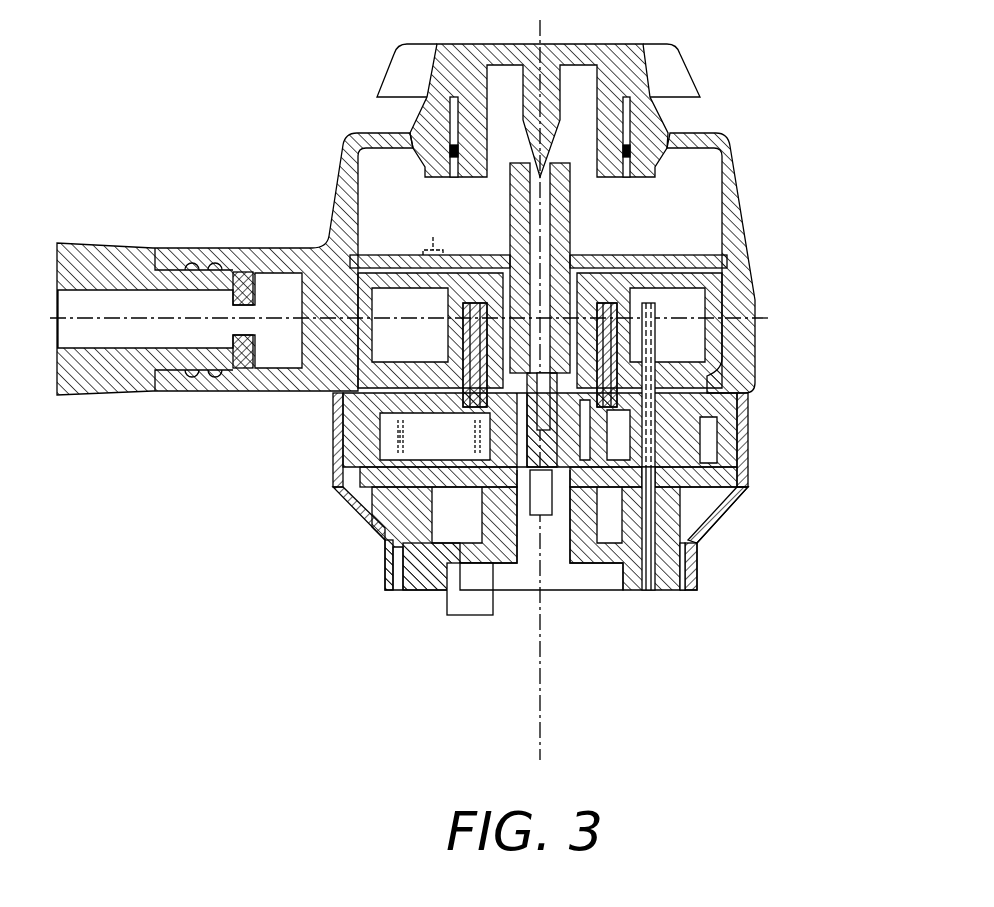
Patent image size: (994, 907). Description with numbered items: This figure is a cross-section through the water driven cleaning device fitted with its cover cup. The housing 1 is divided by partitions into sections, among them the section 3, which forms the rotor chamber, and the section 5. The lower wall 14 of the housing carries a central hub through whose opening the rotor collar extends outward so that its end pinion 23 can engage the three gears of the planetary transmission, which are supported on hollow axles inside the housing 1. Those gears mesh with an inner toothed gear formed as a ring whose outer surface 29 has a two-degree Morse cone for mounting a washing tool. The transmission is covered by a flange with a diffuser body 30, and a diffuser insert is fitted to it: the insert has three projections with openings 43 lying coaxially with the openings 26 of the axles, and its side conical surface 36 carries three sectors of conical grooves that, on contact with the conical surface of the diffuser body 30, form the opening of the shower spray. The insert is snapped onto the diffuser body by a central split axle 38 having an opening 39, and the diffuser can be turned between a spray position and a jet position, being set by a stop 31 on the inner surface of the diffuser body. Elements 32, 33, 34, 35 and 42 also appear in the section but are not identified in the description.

The housing 1 is at (743, 168).
The section 3 is at (712, 357).
The section 5 is at (390, 533).
The lower wall 14 is at (390, 440).
The end pinion 23 is at (402, 433).
The openings of the axles 26 is at (653, 397).
The outer surface 29 is at (350, 422).
The diffuser body 30 is at (403, 527).
The stop 31 is at (386, 560).
The connector block 32 is at (443, 590).
The actuating stem 33 is at (647, 597).
The lower body 34 is at (683, 537).
The bottom shell 35 is at (570, 580).
The side conical surface 36 is at (437, 592).
The central split axle 38 is at (593, 302).
The opening 39 is at (527, 545).
The gasket 42 is at (728, 503).
The openings 43 is at (680, 597).